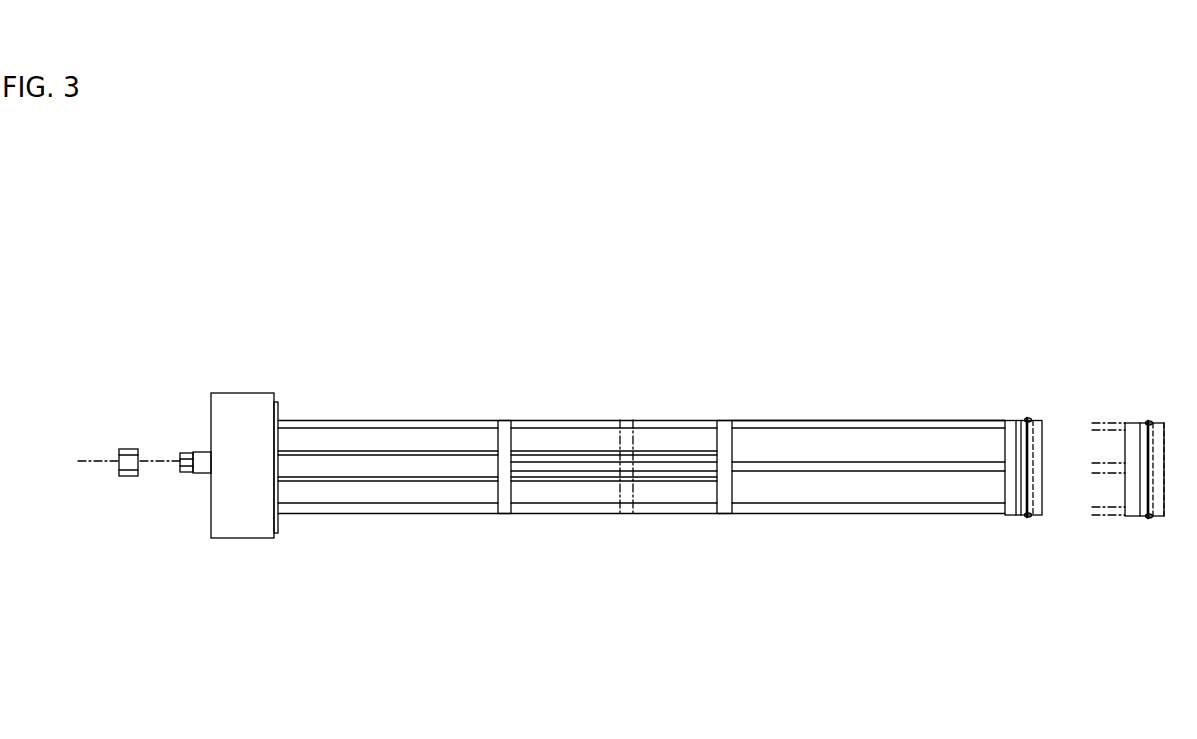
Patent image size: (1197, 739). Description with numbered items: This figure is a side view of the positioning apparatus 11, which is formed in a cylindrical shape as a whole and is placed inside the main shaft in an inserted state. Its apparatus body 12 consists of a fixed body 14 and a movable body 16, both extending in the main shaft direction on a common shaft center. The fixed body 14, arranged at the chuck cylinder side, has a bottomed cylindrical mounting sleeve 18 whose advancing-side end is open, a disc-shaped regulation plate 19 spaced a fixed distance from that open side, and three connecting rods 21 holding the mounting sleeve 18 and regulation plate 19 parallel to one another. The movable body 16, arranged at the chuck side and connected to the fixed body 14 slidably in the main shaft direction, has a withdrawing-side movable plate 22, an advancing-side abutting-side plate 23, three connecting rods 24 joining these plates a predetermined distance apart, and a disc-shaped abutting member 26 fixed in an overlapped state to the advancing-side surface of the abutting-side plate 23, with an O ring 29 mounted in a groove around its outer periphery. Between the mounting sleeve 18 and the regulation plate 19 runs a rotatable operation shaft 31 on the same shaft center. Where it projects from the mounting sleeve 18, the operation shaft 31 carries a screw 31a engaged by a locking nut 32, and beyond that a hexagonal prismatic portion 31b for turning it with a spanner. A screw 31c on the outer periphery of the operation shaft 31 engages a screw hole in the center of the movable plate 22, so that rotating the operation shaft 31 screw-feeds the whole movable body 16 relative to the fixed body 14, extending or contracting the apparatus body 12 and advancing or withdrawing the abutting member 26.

The positioning apparatus 11 is at (625, 442).
The apparatus body 12 is at (625, 442).
The fixed body 14 is at (378, 531).
The movable body 16 is at (908, 522).
The mounting sleeve 18 is at (242, 540).
The regulation plate 19 is at (723, 515).
The connecting rods 21 is at (434, 420).
The movable plate 22 is at (505, 516).
The abutting-side plate 23 is at (1011, 518).
The connecting rods 24 is at (792, 462).
The abutting member 26 is at (1035, 518).
The O ring 29 is at (1029, 418).
The operation shaft 31 is at (653, 453).
The screw 31a is at (203, 475).
The prismatic portion 31b is at (185, 475).
The screw 31c is at (690, 483).
The locking nut 32 is at (130, 447).